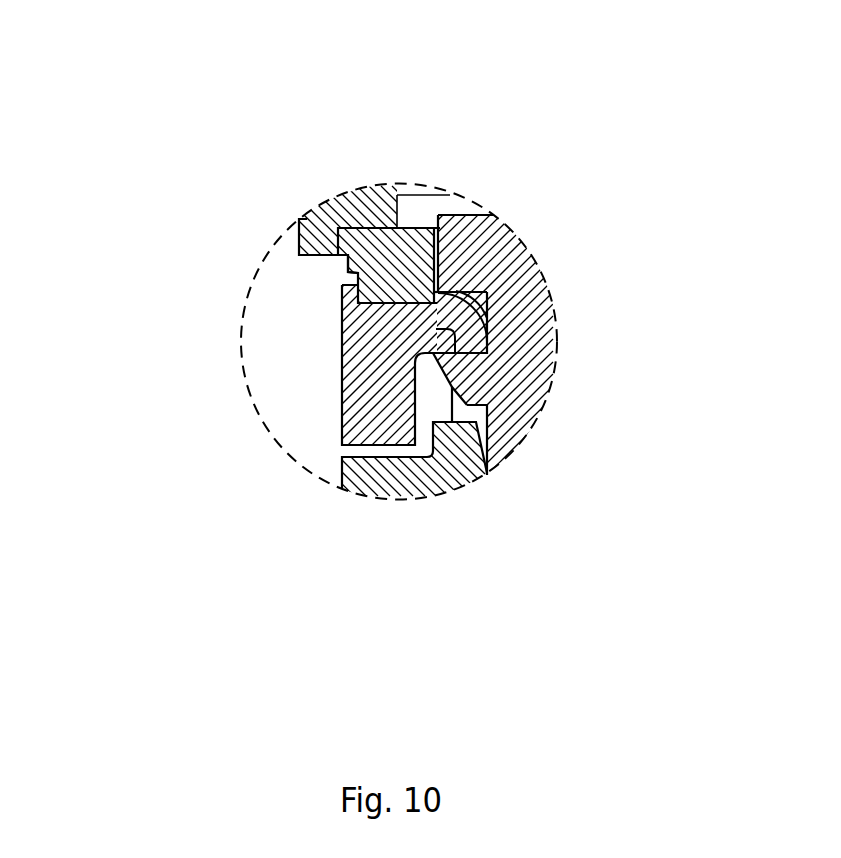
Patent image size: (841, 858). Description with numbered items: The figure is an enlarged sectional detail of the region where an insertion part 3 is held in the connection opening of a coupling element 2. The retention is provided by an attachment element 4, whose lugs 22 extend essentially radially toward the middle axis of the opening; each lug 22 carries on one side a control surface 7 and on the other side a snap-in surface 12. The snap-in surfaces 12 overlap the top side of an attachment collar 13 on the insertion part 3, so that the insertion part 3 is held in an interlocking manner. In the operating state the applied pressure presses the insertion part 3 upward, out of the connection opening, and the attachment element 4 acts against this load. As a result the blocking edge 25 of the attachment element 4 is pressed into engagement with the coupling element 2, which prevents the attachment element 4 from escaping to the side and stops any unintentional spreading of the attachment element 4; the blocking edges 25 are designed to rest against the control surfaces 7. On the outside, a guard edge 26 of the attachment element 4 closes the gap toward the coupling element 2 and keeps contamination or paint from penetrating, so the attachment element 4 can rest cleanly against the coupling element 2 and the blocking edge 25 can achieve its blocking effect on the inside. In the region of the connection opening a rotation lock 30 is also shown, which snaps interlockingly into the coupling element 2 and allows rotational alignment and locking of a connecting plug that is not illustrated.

The coupling element 2 is at (404, 253).
The insertion part 3 is at (532, 340).
The attachment element 4 is at (360, 372).
The control surface 7 is at (487, 306).
The snap-in surface 12 is at (436, 329).
The attachment collar 13 is at (468, 382).
The lug 22 is at (468, 333).
The blocking edge 25 is at (442, 293).
The guard edge 26 is at (350, 288).
The rotation lock 30 is at (366, 206).